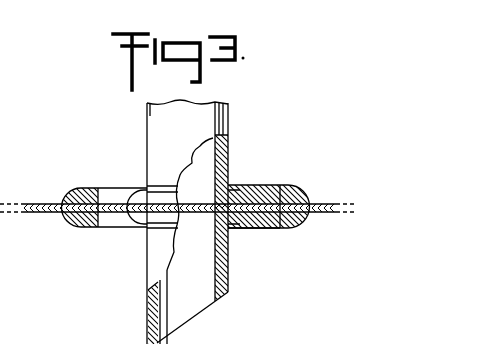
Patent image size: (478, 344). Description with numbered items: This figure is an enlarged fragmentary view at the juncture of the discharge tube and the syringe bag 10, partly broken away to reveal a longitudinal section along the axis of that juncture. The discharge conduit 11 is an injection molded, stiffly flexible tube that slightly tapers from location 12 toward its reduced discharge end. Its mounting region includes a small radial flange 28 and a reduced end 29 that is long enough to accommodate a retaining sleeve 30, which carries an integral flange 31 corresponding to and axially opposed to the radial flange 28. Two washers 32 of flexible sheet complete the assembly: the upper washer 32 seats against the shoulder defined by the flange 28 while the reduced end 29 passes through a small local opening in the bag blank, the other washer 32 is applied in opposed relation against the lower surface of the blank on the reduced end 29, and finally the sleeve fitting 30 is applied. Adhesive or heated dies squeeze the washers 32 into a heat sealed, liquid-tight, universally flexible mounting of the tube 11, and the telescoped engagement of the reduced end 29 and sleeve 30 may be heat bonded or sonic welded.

The bag 10 is at (32, 204).
The discharge conduit 11 is at (215, 118).
The location 12 is at (304, 171).
The radial flange 28 is at (240, 186).
The reduced end 29 is at (193, 327).
The retaining sleeve 30 is at (230, 296).
The integral flange 31 is at (237, 233).
The washers 32 is at (93, 182).